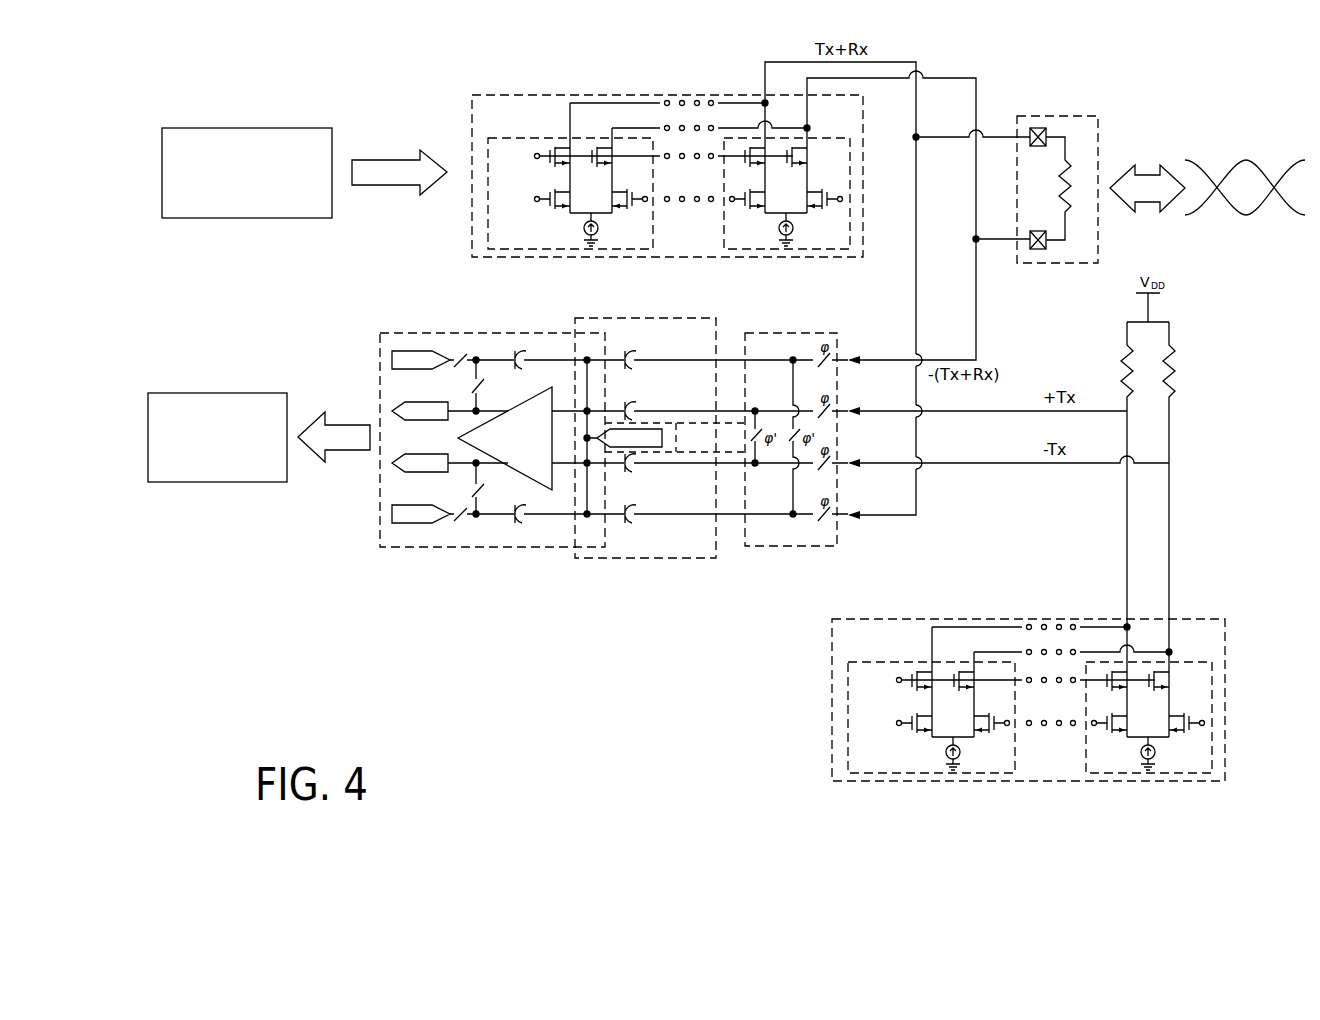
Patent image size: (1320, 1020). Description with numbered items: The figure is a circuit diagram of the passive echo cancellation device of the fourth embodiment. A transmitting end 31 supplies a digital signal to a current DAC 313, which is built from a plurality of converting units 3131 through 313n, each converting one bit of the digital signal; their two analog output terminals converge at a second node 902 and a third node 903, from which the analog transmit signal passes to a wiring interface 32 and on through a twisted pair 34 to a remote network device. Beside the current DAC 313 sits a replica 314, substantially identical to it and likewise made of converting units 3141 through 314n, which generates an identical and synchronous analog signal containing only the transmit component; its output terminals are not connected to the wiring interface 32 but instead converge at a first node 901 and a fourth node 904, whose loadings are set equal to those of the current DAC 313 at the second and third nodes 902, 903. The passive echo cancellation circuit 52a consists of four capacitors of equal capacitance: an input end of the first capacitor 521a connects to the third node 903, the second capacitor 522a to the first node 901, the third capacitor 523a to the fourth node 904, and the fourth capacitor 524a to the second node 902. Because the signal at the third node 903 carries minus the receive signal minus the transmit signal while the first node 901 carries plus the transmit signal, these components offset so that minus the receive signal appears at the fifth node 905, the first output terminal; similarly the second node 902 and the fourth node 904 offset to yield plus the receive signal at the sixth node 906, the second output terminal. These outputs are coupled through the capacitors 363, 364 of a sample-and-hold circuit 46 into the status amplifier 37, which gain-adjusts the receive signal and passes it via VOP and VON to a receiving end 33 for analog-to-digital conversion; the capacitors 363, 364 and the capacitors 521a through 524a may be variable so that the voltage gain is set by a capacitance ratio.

The transmitting end 31 is at (268, 128).
The receiving end 33 is at (220, 482).
The current DAC 313 is at (631, 183).
The converting unit 3131 is at (655, 222).
The converting unit 313n is at (825, 136).
The replica 314 is at (994, 705).
The converting unit 3141 is at (966, 705).
The converting unit 314n is at (1156, 698).
The first node 901 is at (1127, 627).
The second node 902 is at (916, 137).
The third node 903 is at (976, 239).
The fourth node 904 is at (1169, 652).
The fifth node 905 is at (587, 411).
The sixth node 906 is at (587, 470).
The wiring interface 32 is at (1046, 263).
The twisted pair 34 is at (1243, 161).
The status amplifier 37 is at (509, 400).
The sample-and-hold circuit 46 is at (492, 439).
The capacitor 363 is at (522, 351).
The capacitor 364 is at (522, 523).
The passive echo cancellation circuit 52a is at (672, 459).
The first capacitor 521a is at (646, 355).
The second capacitor 522a is at (630, 402).
The third capacitor 523a is at (632, 472).
The fourth capacitor 524a is at (646, 523).